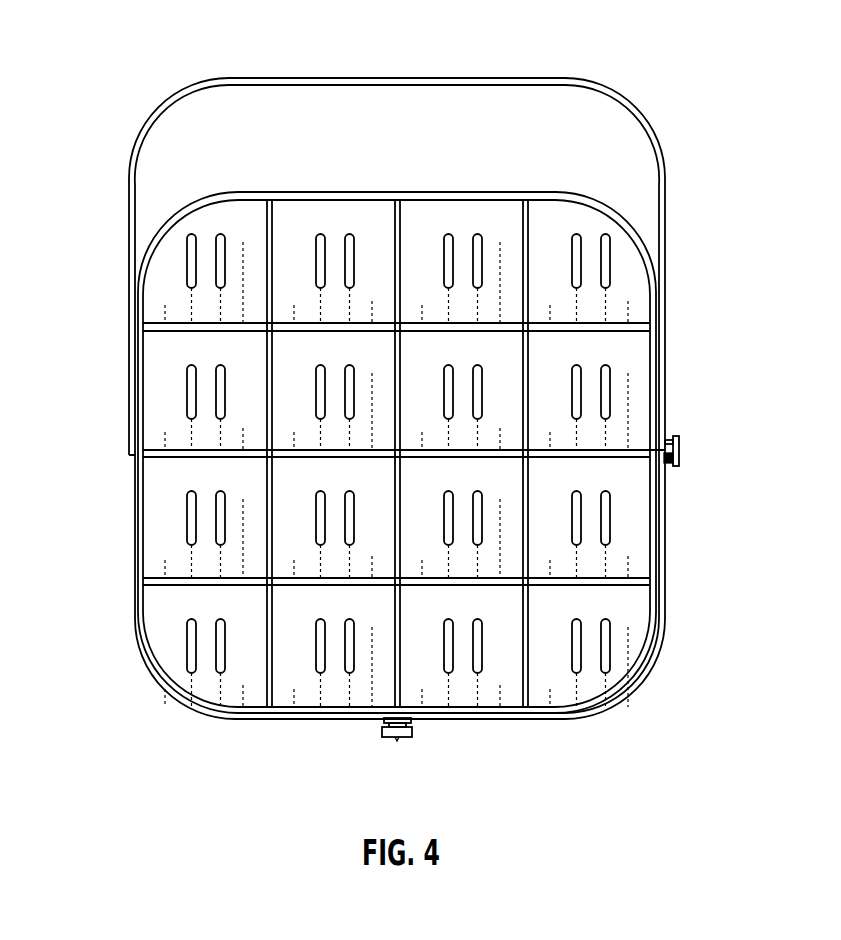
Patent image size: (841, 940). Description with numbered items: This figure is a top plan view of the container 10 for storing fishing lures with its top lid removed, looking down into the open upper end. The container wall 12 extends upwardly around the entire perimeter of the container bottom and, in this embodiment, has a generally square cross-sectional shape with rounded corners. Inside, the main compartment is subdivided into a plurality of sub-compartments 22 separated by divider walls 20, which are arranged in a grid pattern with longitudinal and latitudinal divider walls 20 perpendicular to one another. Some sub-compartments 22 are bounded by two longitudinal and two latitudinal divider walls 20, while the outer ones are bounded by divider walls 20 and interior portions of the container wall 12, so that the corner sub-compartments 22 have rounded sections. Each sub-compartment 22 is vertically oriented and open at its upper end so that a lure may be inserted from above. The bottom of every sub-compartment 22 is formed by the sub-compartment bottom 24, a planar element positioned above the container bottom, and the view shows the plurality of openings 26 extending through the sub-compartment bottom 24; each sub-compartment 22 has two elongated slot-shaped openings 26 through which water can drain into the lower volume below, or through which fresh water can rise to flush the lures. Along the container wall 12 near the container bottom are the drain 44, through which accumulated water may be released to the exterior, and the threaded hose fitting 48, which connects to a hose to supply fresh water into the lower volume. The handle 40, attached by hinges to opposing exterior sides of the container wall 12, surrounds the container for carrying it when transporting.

The container 10 is at (106, 36).
The container wall 12 is at (264, 191).
The divider walls 20 is at (530, 217).
The sub-compartments 22 is at (436, 218).
The sub-compartment bottom 24 is at (594, 224).
The openings 26 is at (214, 386).
The handle 40 is at (633, 109).
The drain 44 is at (669, 462).
The threaded hose fitting 48 is at (395, 741).